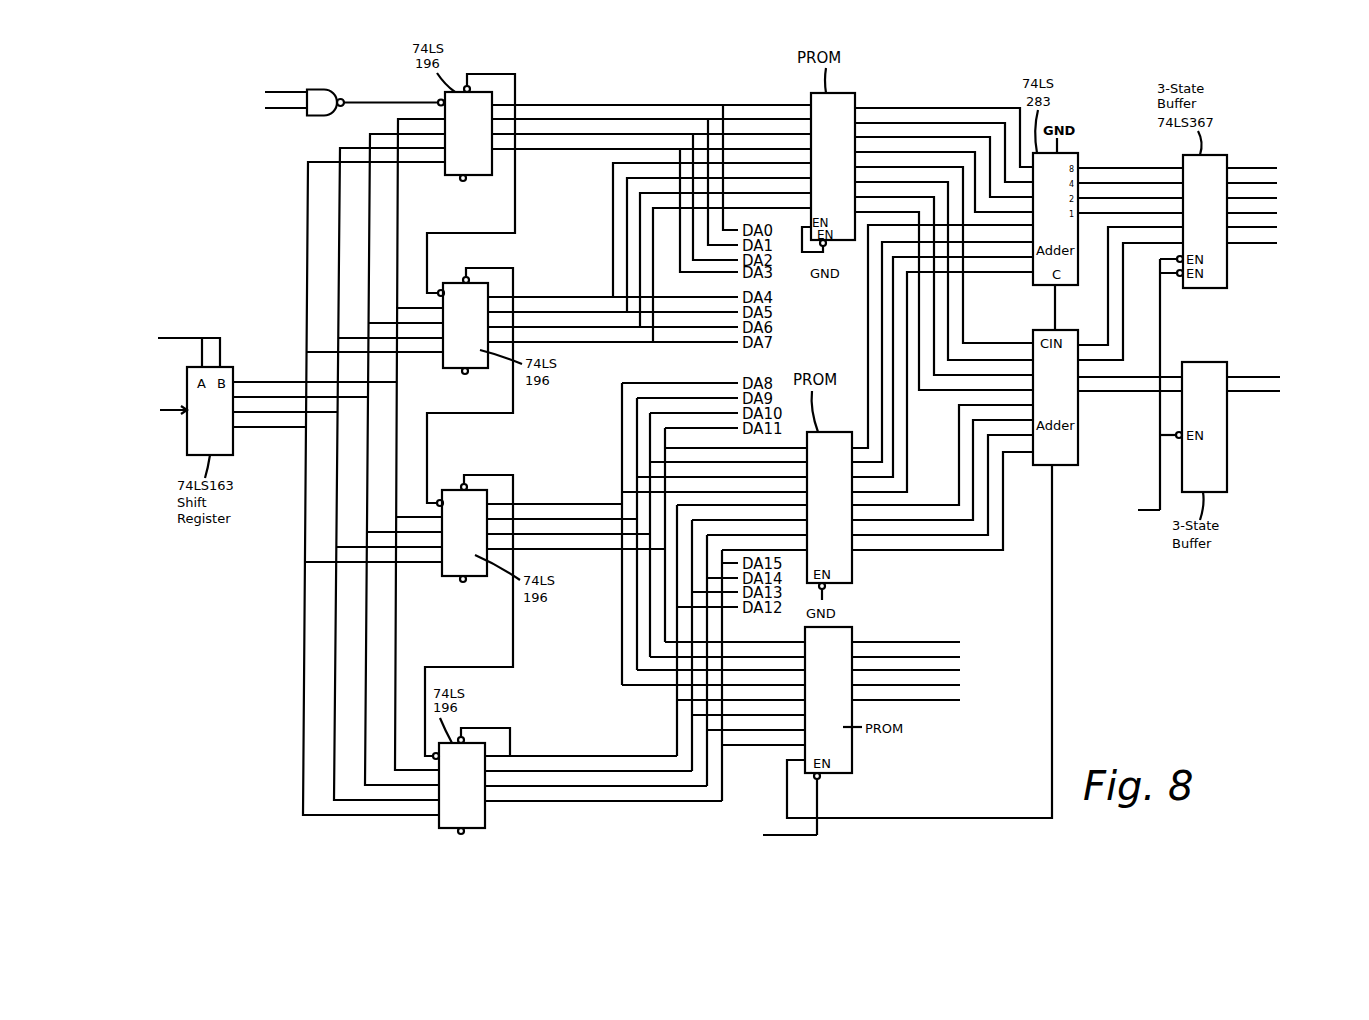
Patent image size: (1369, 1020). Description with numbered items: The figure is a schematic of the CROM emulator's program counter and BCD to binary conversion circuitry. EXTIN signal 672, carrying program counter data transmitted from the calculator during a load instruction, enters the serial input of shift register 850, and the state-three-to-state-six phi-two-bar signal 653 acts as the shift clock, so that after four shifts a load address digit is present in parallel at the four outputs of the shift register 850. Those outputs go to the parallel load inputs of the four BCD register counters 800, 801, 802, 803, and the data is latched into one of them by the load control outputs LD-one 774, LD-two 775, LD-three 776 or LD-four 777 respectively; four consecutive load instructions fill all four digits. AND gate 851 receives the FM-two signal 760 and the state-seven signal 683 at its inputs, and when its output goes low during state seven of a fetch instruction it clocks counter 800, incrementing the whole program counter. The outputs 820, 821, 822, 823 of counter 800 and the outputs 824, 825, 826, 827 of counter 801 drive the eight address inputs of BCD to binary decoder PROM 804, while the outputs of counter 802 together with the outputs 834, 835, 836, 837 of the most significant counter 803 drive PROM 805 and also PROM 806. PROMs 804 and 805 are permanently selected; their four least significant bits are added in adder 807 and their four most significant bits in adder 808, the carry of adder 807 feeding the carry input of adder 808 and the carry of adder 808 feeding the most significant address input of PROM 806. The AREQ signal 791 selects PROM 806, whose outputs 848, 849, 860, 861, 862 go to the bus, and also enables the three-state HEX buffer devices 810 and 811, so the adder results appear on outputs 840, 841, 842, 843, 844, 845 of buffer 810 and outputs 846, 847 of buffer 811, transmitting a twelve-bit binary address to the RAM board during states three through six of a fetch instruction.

The FM2 signal 760 is at (288, 92).
The state 7 signal 683 is at (285, 108).
The AND gate 851 is at (345, 90).
The LD1 load control output 774 is at (462, 183).
The register counter 800 is at (484, 178).
The BCD program counter output 820 is at (556, 105).
The BCD program counter output 821 is at (608, 119).
The BCD program counter output 822 is at (668, 134).
The BCD program counter output 823 is at (752, 149).
The counter output 824 is at (613, 190).
The counter output 825 is at (627, 222).
The counter output 826 is at (640, 250).
The counter output 827 is at (653, 282).
The BCD to binary decoder PROM 804 is at (858, 93).
The adder 807 is at (1079, 153).
The HEX buffer device 810 is at (1228, 155).
The buffer output 840 is at (1277, 168).
The buffer output 841 is at (1277, 183).
The buffer output 842 is at (1277, 198).
The buffer output 843 is at (1277, 213).
The buffer output 844 is at (1277, 227).
The buffer output 845 is at (1277, 243).
The adder 808 is at (1033, 330).
The HEX buffer device 811 is at (1226, 362).
The buffer output 846 is at (1278, 377).
The buffer output 847 is at (1278, 391).
The AREQ signal 791 is at (941, 553).
The EXTIN signal 672 is at (202, 338).
The shift register 850 is at (233, 367).
The state 3 to state 6 phi-2-bar signal 653 is at (178, 410).
The LD2 load control output 775 is at (464, 376).
The register counter 801 is at (477, 372).
The LD3 load control output 776 is at (462, 585).
The register counter 802 is at (477, 580).
The BCD to binary conversion PROM 805 is at (852, 432).
The BCD to binary conversion PROM 806 is at (853, 628).
The PROM output 848 is at (960, 642).
The PROM output 849 is at (960, 657).
The PROM output 860 is at (960, 670).
The PROM output 861 is at (960, 685).
The PROM output 862 is at (960, 700).
The counter output 834 is at (553, 756).
The counter output 835 is at (620, 771).
The counter output 836 is at (538, 786).
The counter output 837 is at (612, 801).
The LD4 load control output 777 is at (461, 834).
The register counter 803 is at (481, 828).